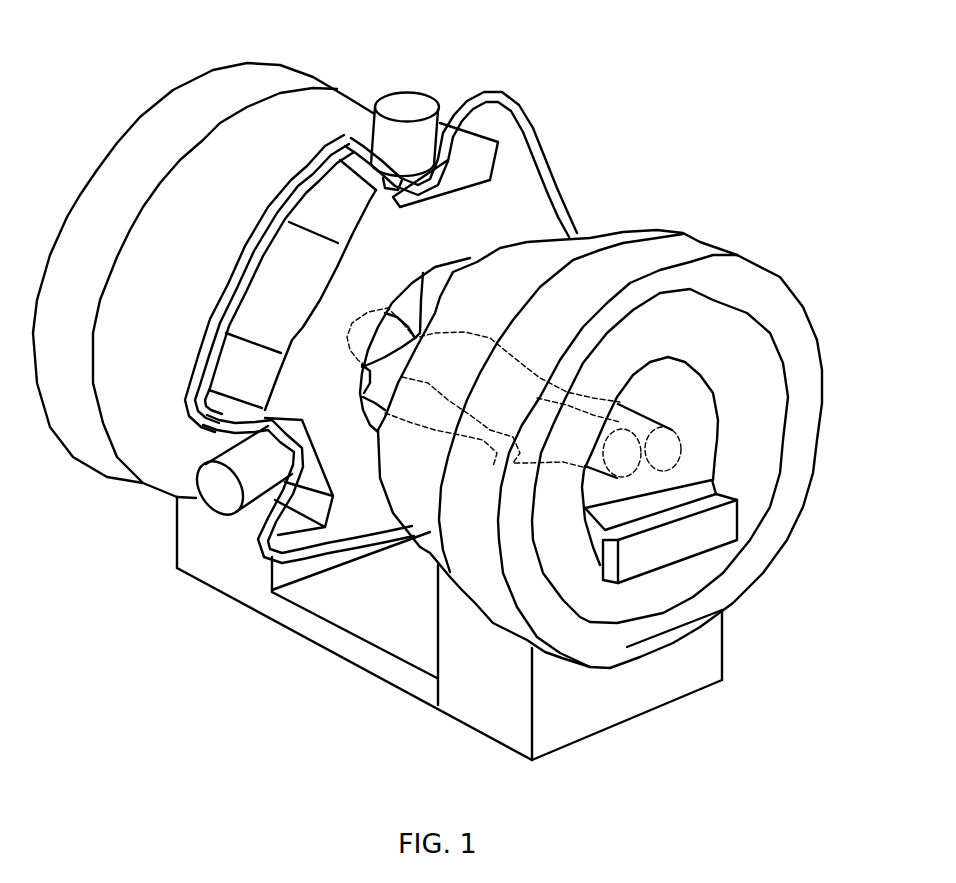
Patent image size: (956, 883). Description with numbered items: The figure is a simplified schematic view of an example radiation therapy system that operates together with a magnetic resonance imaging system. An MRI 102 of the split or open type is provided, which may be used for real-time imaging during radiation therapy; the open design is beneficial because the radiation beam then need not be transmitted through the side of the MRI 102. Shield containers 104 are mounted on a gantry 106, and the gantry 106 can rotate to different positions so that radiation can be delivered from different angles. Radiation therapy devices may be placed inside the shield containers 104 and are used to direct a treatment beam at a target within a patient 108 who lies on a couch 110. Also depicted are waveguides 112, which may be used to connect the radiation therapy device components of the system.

The MRI 102 is at (427, 395).
The shield containers 104 is at (258, 324).
The gantry 106 is at (431, 329).
The patient 108 is at (595, 420).
The couch 110 is at (688, 549).
The waveguides 112 is at (386, 368).